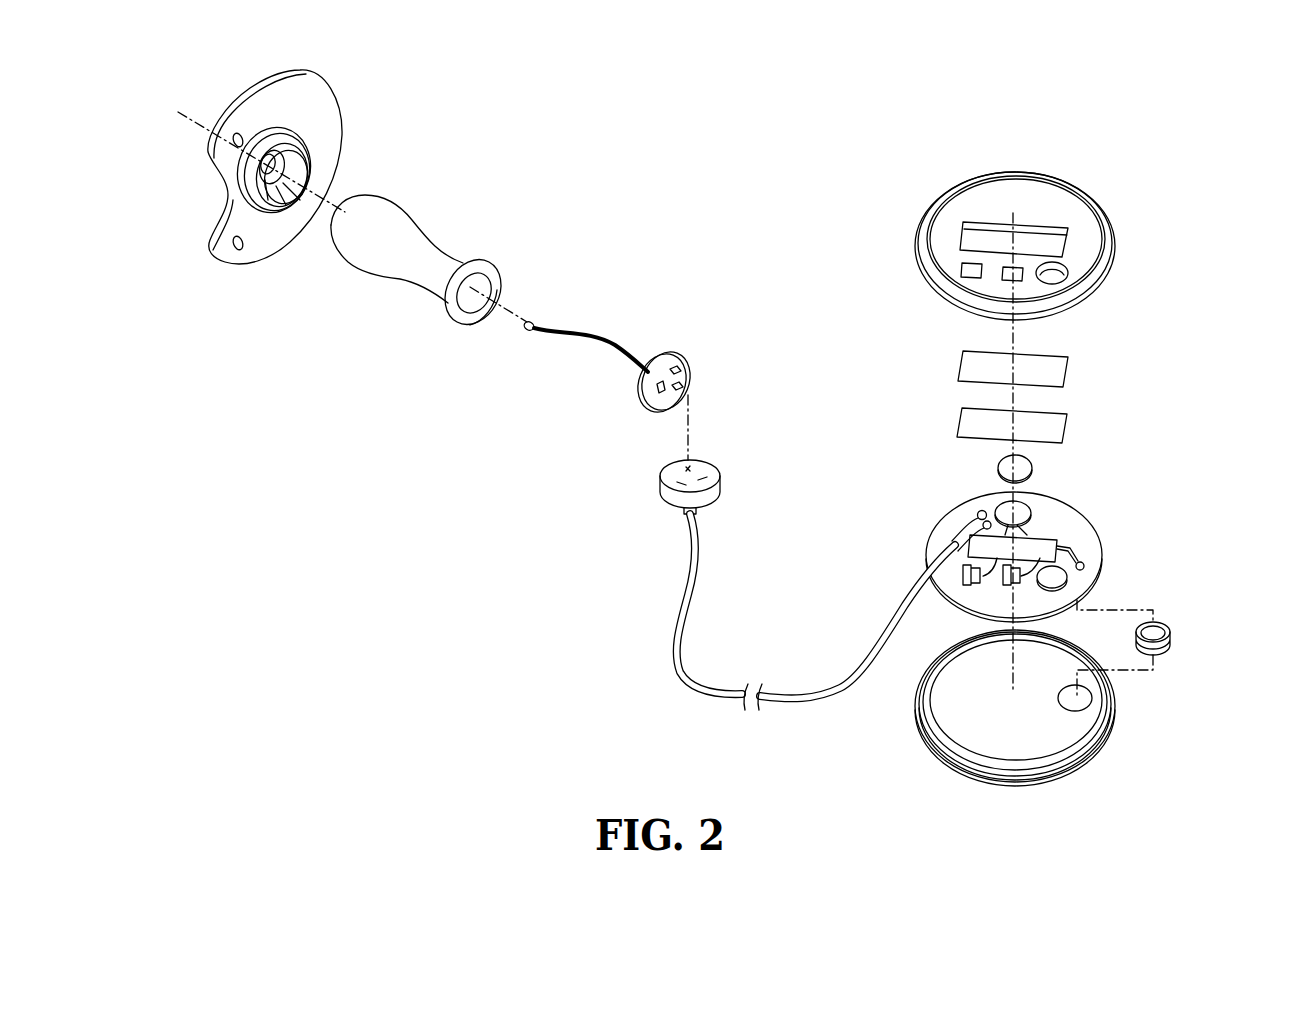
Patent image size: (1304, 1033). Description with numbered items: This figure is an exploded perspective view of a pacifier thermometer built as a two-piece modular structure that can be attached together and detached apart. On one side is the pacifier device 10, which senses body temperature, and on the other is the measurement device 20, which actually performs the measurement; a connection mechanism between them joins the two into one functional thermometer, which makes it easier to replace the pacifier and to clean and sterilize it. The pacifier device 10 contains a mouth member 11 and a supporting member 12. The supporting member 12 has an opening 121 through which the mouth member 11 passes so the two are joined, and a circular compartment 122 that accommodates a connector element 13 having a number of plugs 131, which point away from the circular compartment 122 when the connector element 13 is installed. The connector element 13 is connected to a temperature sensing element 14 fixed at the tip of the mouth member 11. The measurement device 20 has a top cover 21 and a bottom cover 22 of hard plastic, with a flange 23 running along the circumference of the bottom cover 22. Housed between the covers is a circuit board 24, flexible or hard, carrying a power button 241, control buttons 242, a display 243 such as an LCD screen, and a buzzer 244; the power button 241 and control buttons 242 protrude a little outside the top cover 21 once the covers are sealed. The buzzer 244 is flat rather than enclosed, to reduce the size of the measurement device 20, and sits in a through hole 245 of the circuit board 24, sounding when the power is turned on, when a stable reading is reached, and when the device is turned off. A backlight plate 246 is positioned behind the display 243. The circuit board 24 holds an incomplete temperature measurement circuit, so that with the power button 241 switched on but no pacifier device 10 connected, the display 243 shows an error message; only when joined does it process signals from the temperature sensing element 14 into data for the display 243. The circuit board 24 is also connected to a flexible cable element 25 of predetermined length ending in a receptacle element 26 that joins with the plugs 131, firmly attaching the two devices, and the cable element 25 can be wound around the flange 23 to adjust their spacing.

The pacifier device 10 is at (697, 368).
The mouth member 11 is at (398, 274).
The supporting member 12 is at (267, 243).
The opening 121 is at (285, 213).
The circular compartment 122 is at (213, 258).
The connector element 13 is at (686, 435).
The plugs 131 is at (687, 378).
The temperature sensing element 14 is at (526, 331).
The measurement device 20 is at (1113, 757).
The top cover 21 is at (1053, 198).
The bottom cover 22 is at (1015, 787).
The flange 23 is at (1070, 755).
The circuit board 24 is at (1033, 584).
The power button 241 is at (1055, 577).
The control buttons 242 is at (963, 586).
The display 243 is at (1047, 370).
The buzzer 244 is at (1025, 468).
The through hole 245 is at (1003, 508).
The backlight plate 246 is at (1053, 430).
The cable element 25 is at (843, 692).
The receptacle element 26 is at (670, 500).